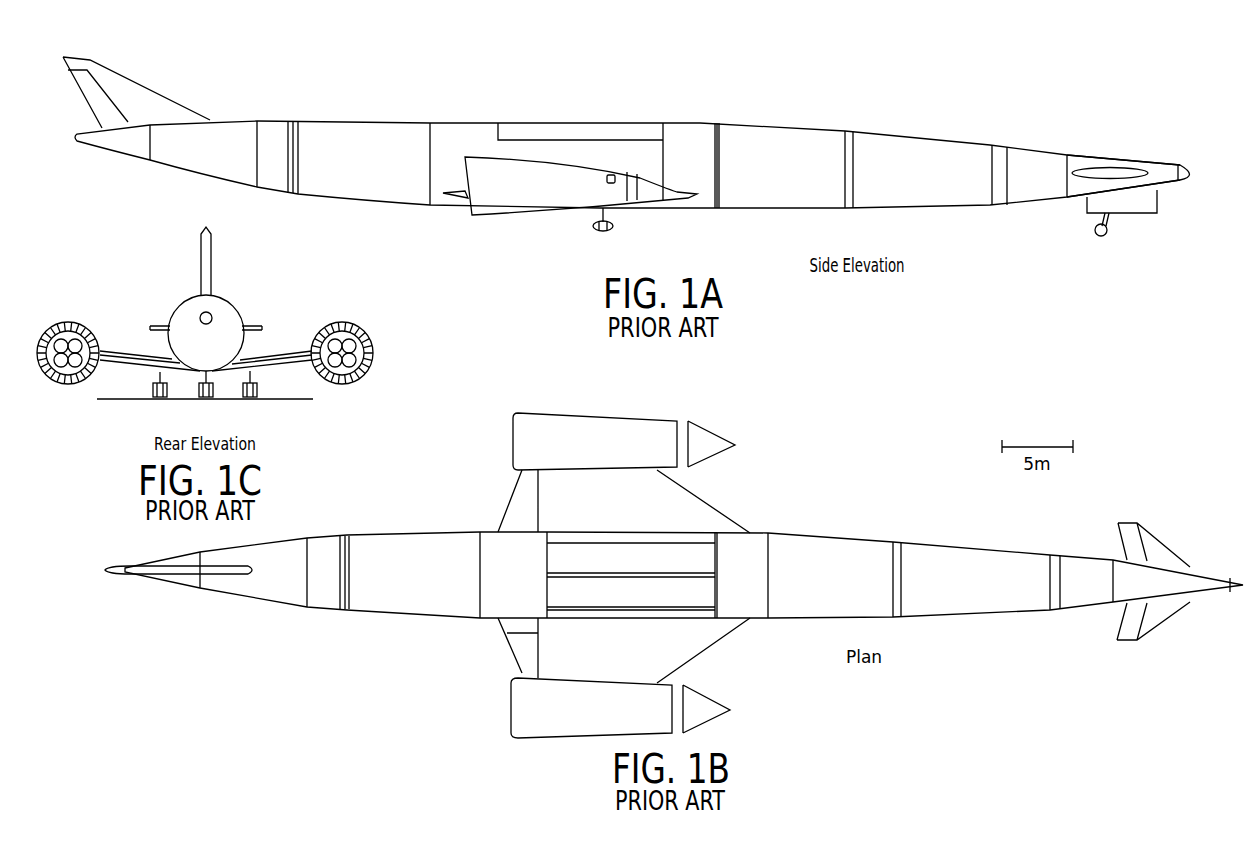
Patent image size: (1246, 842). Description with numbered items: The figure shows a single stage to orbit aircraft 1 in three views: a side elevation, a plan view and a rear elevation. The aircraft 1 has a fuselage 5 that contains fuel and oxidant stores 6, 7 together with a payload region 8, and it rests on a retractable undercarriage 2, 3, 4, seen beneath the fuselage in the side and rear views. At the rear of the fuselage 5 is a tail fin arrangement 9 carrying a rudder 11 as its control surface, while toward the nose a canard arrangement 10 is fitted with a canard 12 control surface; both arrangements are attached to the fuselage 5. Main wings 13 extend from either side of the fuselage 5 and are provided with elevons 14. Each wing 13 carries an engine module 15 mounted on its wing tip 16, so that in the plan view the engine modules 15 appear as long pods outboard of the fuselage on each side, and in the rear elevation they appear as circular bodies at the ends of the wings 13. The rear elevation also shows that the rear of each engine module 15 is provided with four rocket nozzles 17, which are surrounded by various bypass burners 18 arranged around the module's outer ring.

In FIG. 1A, the single stage to orbit aircraft 1 is at (778, 143).
In FIG. 1A, the retractable undercarriage 2 is at (1114, 228).
In FIG. 1C, the retractable undercarriage 2 is at (200, 392).
In FIG. 1A, the retractable undercarriage 3 is at (596, 228).
In FIG. 1C, the retractable undercarriage 3 is at (258, 390).
In FIG. 1C, the retractable undercarriage 4 is at (152, 390).
In FIG. 1A, the fuselage 5 is at (693, 137).
In FIG. 1B, the fuselage 5 is at (800, 553).
In FIG. 1A, the fuel store 6 is at (404, 107).
In FIG. 1A, the oxidant store 7 is at (897, 123).
In FIG. 1A, the payload region 8 is at (603, 133).
In FIG. 1A, the tail fin arrangement 9 is at (124, 93).
In FIG. 1B, the canard arrangement 10 is at (1155, 612).
In FIG. 1A, the rudder 11 is at (88, 101).
In FIG. 1C, the rudder 11 is at (210, 272).
In FIG. 1C, the canard control surface 12 is at (152, 328).
In FIG. 1B, the canard control surface 12 is at (1128, 545).
In FIG. 1C, the main wing 13 is at (280, 357).
In FIG. 1B, the main wing 13 is at (697, 508).
In FIG. 1B, the elevon 14 is at (512, 495).
In FIG. 1C, the engine module 15 is at (363, 333).
In FIG. 1B, the engine module 15 is at (662, 432).
In FIG. 1B, the wing tip 16 is at (587, 485).
In FIG. 1C, the rocket nozzle 17 is at (333, 367).
In FIG. 1C, the bypass burner 18 is at (367, 375).